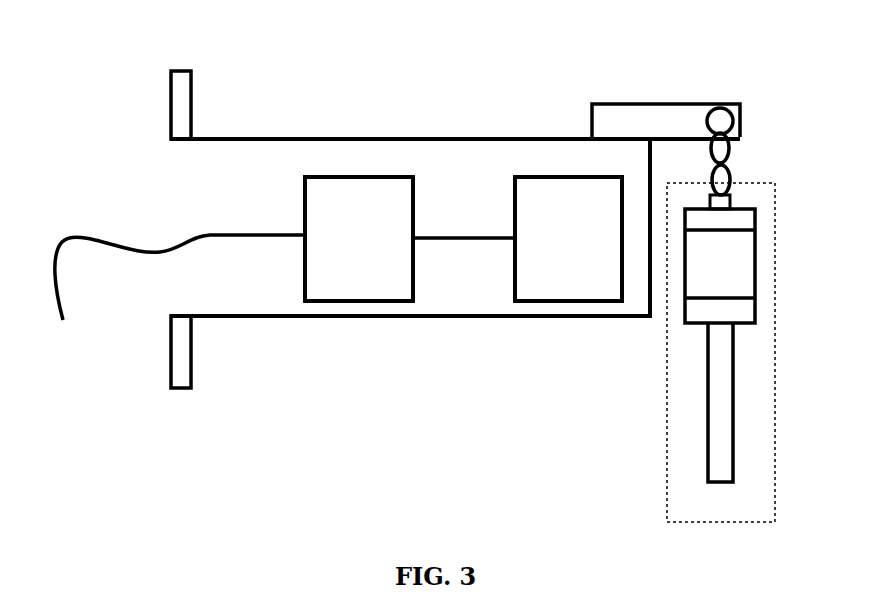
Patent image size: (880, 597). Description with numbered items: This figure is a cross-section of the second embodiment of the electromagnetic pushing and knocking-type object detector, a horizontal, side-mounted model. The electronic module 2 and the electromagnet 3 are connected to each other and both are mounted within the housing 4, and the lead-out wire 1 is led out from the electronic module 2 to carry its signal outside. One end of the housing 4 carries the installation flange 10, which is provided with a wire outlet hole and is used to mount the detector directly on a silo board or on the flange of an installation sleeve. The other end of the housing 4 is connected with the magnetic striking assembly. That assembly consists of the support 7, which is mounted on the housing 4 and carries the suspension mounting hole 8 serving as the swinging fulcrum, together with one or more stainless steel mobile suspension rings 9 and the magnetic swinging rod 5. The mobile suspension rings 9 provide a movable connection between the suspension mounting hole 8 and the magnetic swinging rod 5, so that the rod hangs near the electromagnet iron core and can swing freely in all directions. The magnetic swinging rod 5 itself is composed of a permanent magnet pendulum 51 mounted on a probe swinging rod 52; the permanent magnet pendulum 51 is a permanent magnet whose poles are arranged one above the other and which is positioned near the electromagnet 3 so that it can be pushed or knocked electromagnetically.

The lead-out wire 1 is at (97, 233).
The electronic module 2 is at (358, 175).
The electromagnet 3 is at (571, 175).
The housing 4 is at (378, 317).
The magnetic swinging rod 5 is at (775, 475).
The support 7 is at (667, 101).
The suspension mounting hole 8 is at (735, 102).
The mobile suspension rings 9 is at (732, 162).
The installation flange 10 is at (169, 100).
The permanent magnet pendulum 51 is at (757, 268).
The probe swinging rod 52 is at (730, 194).